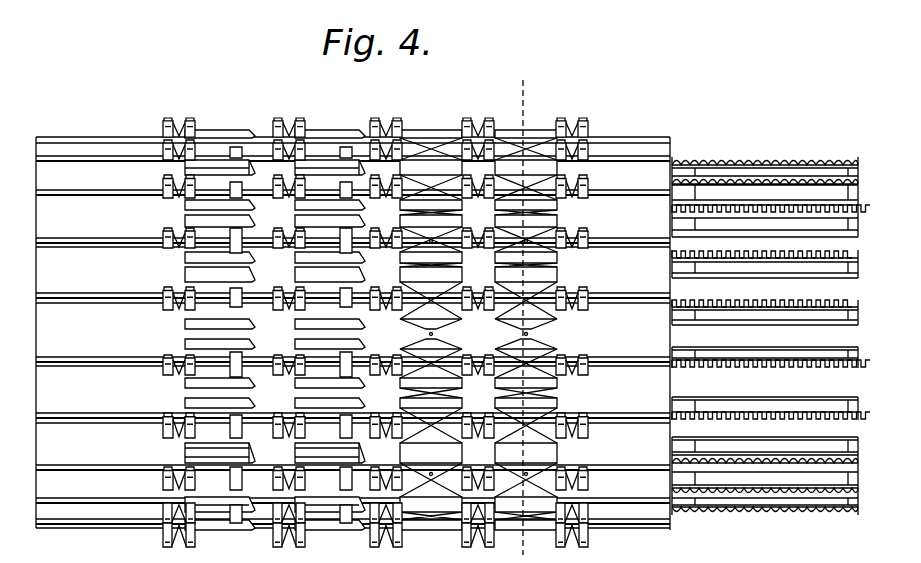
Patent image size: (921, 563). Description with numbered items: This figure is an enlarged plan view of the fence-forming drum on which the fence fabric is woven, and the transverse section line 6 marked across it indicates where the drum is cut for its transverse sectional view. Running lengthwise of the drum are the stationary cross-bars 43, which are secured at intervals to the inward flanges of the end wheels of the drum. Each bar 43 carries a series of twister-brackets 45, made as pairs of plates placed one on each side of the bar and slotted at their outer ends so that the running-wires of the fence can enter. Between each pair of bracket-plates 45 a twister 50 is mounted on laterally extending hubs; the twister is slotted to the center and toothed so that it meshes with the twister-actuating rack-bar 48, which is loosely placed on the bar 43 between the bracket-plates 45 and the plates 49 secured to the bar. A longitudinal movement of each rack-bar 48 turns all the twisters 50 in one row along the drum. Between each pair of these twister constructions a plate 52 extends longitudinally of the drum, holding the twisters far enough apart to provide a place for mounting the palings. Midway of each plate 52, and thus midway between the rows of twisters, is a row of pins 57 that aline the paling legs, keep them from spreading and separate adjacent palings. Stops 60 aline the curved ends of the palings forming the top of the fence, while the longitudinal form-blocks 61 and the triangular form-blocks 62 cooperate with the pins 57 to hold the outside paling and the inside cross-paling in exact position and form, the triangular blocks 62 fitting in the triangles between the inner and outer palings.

The section line 6 6 is at (521, 314).
The cross-bar 43 is at (852, 230).
The twister-bracket 45 is at (170, 198).
The twister-actuating rack-bar 48 is at (852, 262).
The plate 49 is at (850, 484).
The twister 50 is at (586, 286).
The plate 52 is at (353, 333).
The pin 57 is at (588, 186).
The stop 60 is at (243, 352).
The longitudinal form-block 61 is at (220, 128).
The triangular form-block 62 is at (432, 128).